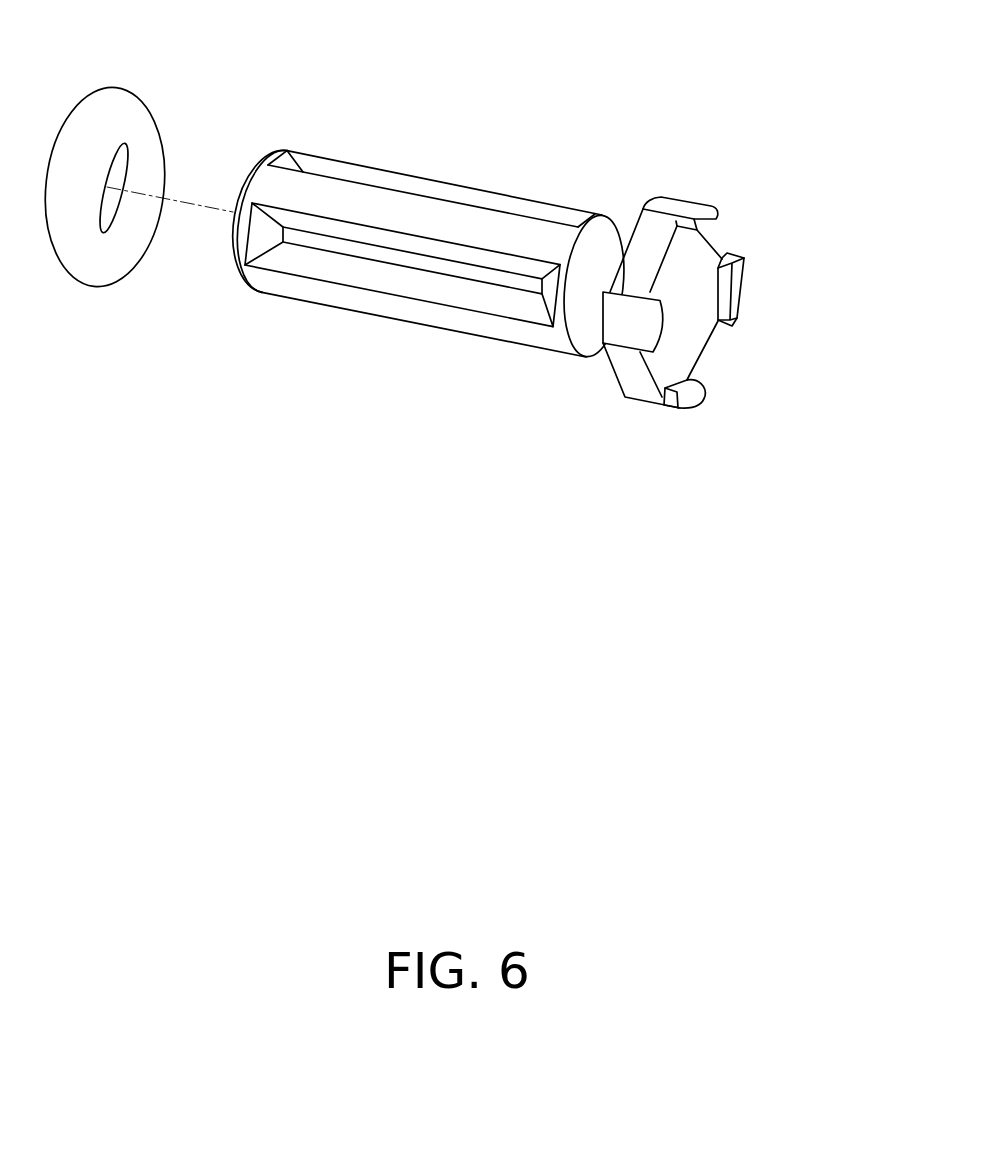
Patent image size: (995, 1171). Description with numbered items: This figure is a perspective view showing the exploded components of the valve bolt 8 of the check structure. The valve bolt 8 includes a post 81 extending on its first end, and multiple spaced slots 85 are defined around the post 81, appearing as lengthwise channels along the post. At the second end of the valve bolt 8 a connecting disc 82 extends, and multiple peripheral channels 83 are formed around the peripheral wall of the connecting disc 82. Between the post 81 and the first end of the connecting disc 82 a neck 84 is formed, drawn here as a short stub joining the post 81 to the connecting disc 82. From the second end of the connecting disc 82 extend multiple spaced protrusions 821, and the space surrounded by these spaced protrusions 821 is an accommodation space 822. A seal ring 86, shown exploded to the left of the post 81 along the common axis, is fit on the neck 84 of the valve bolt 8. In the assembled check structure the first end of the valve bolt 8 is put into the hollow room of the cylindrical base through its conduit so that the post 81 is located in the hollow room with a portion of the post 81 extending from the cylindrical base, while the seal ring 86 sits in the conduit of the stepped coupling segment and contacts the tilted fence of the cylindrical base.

The valve bolt 8 is at (276, 150).
The post 81 is at (555, 242).
The connecting disc 82 is at (730, 260).
The spaced protrusions 821 is at (707, 210).
The accommodation space 822 is at (690, 303).
The peripheral channels 83 is at (648, 229).
The neck 84 is at (597, 330).
The spaced slots 85 is at (343, 247).
The seal ring 86 is at (120, 105).